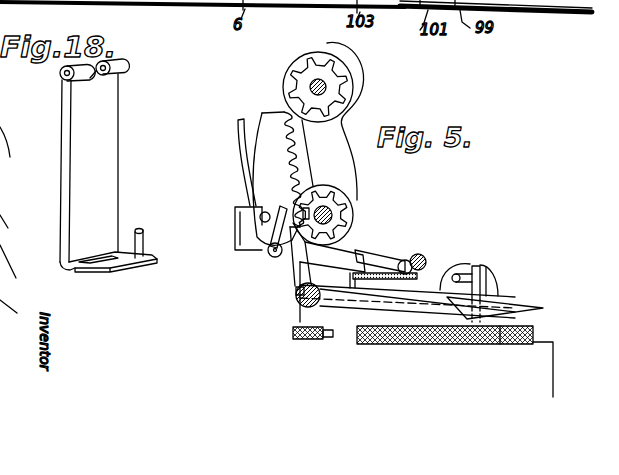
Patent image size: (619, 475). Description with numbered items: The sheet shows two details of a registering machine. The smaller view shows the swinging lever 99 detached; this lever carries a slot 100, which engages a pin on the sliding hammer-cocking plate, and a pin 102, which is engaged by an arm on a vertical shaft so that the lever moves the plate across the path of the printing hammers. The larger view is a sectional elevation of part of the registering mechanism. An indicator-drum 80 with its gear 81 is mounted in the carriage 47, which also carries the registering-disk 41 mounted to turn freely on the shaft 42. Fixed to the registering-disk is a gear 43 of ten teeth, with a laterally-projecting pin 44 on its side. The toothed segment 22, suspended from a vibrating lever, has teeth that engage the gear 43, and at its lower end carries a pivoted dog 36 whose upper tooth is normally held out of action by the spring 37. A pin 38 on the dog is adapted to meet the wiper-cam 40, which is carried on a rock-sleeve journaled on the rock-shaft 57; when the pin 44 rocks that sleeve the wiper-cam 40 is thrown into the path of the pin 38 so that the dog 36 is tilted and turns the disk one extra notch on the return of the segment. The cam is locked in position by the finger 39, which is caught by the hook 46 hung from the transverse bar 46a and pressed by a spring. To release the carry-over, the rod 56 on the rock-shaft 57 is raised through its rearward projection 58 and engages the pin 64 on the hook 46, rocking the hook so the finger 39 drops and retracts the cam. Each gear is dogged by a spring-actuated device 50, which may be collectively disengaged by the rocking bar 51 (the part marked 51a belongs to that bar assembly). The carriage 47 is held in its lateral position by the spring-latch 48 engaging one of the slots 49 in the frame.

In FIG. 18, the swinging lever 99 is at (105, 150).
In FIG. 18, the slot 100 is at (83, 274).
In FIG. 18, the pin 102 is at (141, 231).
In FIG. 5, the indicator-drum 80 is at (300, 78).
In FIG. 5, the gear 81 is at (353, 78).
In FIG. 5, the toothed segment 22 is at (281, 172).
In FIG. 5, the registering-disk 41 is at (347, 189).
In FIG. 5, the shaft 42 is at (345, 213).
In FIG. 5, the gear 43 is at (338, 187).
In FIG. 5, the pin 44 is at (241, 225).
In FIG. 5, the dog 36 is at (243, 237).
In FIG. 5, the spring 37 is at (252, 256).
In FIG. 5, the pin 38 is at (270, 266).
In FIG. 5, the finger 39 is at (407, 285).
In FIG. 5, the wiper-cam 40 is at (290, 270).
In FIG. 5, the rearward projection 58 is at (296, 299).
In FIG. 5, the spring-actuated device 50 is at (345, 270).
In FIG. 5, the rocking bar 51 is at (383, 255).
In FIG. 5, the carriage 47 is at (421, 257).
In FIG. 5, the arm 51a is at (440, 258).
In FIG. 5, the rod 56 is at (462, 275).
In FIG. 5, the pin 64 is at (478, 268).
In FIG. 5, the transverse bar 46a is at (482, 272).
In FIG. 5, the hook 46 is at (487, 277).
In FIG. 5, the spring-latch 48 is at (505, 305).
In FIG. 5, the slot 49 is at (377, 331).
In FIG. 5, the rock-shaft 57 is at (300, 306).